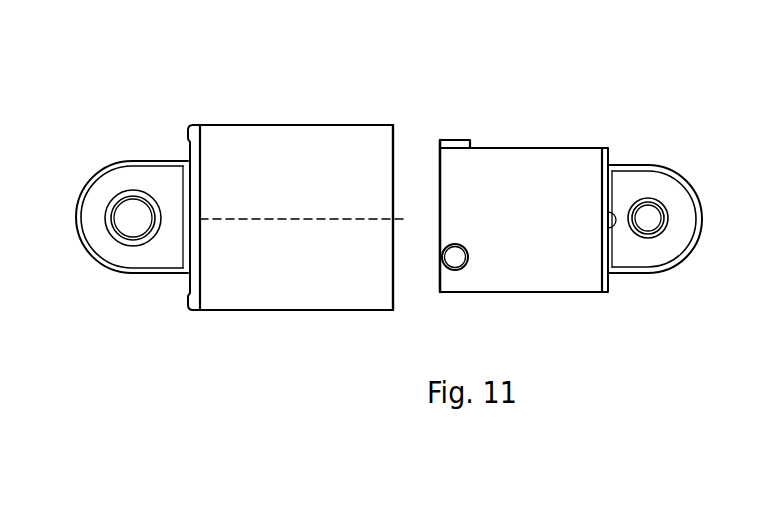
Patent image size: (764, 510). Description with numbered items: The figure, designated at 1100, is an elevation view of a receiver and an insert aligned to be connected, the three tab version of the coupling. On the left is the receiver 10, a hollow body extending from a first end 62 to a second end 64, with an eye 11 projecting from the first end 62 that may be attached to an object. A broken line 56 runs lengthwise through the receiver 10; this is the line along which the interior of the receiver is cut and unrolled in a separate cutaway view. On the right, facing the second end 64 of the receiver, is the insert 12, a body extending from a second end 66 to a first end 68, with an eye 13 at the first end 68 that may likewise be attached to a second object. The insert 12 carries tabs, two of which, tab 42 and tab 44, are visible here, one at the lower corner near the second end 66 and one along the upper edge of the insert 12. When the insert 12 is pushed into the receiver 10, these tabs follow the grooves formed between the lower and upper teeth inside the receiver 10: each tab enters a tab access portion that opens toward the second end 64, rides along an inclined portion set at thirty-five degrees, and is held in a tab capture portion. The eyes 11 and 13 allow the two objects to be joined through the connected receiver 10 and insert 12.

The receiver 10 is at (293, 135).
The eye 11 is at (92, 195).
The insert 12 is at (535, 157).
The eye 13 is at (678, 193).
The tab 42 is at (458, 263).
The tab 44 is at (462, 140).
The line 56 is at (316, 223).
The first end 62 is at (202, 125).
The second end 64 is at (393, 123).
The second end 66 is at (442, 140).
The first end 68 is at (602, 145).
The elevation view of receiver and insert 1100 is at (556, 77).